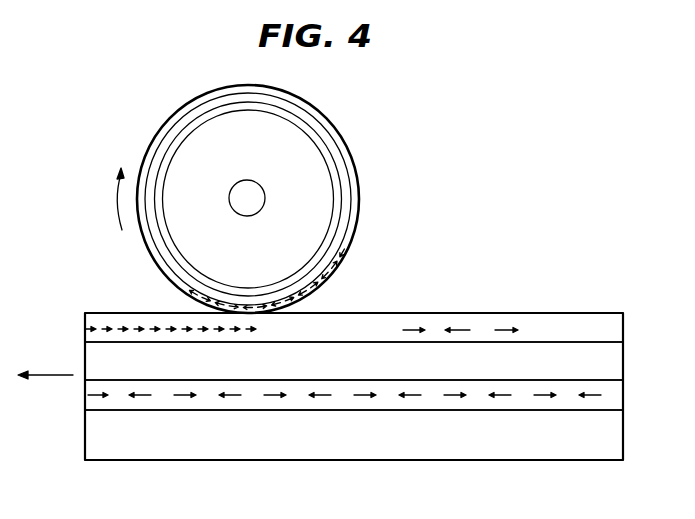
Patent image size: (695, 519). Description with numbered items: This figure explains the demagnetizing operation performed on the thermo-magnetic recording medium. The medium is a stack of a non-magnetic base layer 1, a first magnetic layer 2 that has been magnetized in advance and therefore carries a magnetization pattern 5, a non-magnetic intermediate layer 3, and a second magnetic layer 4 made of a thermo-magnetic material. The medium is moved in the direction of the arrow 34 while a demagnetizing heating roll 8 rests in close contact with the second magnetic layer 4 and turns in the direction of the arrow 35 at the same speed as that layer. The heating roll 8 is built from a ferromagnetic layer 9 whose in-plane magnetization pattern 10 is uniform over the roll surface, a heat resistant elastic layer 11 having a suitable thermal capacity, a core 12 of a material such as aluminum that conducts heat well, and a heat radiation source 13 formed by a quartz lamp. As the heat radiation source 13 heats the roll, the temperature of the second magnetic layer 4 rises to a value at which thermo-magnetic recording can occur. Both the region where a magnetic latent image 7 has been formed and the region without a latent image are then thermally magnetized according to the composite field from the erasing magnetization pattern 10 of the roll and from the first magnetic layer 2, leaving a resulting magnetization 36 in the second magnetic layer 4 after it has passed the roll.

The non-magnetic base layer 1 is at (610, 435).
The first magnetic layer 2 is at (612, 393).
The non-magnetic intermediate layer 3 is at (610, 362).
The second magnetic layer 4 is at (632, 328).
The magnetization pattern 5 is at (222, 397).
The magnetic latent image 7 is at (468, 330).
The demagnetizing heating roll 8 is at (264, 199).
The ferromagnetic layer 9 is at (358, 211).
The in-plane magnetization pattern 10 is at (347, 246).
The heat resistant elastic layer 11 is at (345, 182).
The core 12 is at (324, 157).
The heat radiation source 13 is at (248, 210).
The arrow 34 is at (48, 377).
The arrow 35 is at (115, 218).
The magnetization pattern transferred to upper layer 36 is at (100, 330).